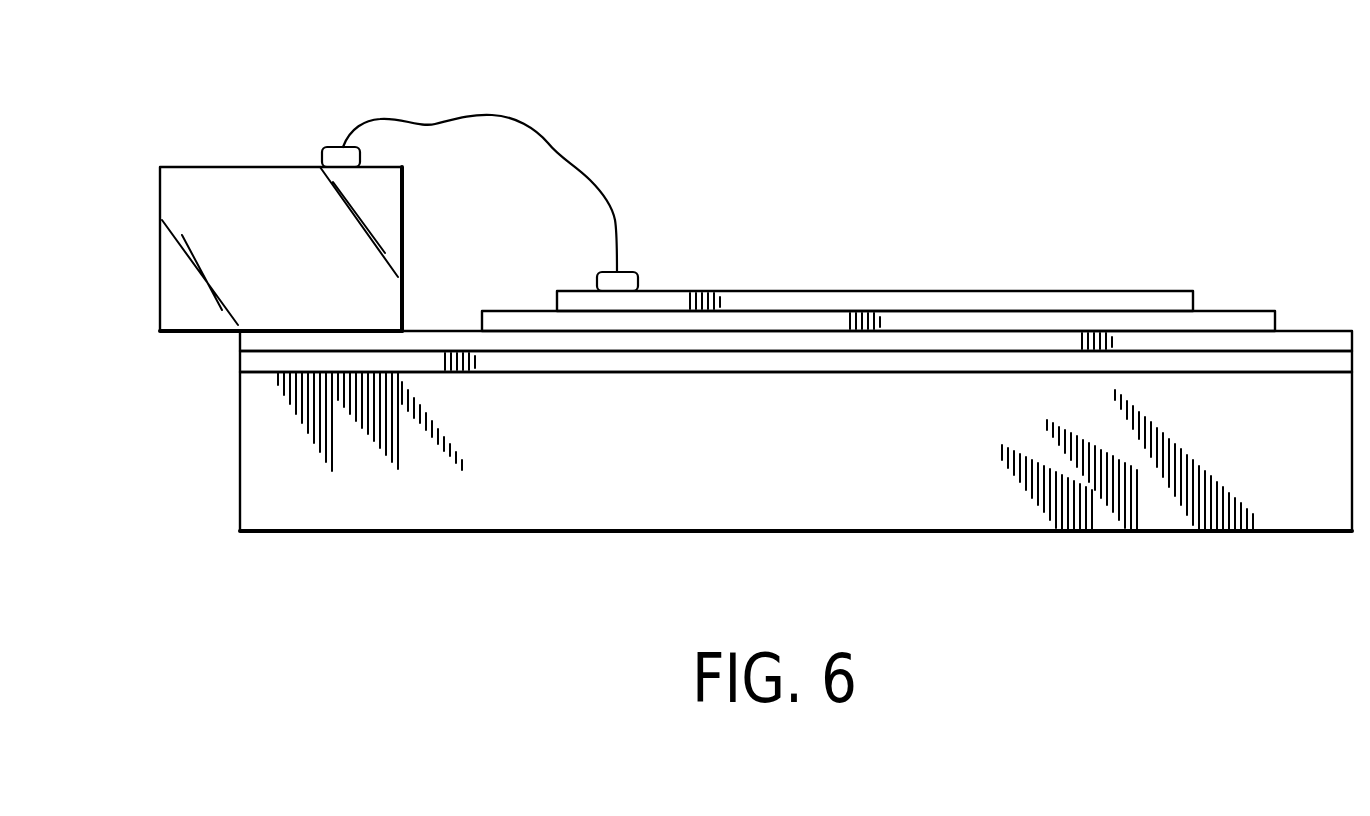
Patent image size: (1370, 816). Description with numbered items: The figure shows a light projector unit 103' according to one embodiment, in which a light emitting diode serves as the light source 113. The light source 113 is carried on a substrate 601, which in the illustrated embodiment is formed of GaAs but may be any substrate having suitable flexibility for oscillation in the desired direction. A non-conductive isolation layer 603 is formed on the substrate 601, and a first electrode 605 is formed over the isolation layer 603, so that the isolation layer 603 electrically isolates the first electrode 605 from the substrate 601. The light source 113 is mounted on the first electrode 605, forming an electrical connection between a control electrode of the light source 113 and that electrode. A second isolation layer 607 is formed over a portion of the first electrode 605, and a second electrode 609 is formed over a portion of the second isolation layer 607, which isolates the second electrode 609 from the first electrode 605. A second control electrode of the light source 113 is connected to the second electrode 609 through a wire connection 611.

The light projector unit 103' is at (707, 303).
The light source 113 is at (281, 239).
The substrate 601 is at (796, 452).
The isolation layer 603 is at (240, 363).
The first electrode 605 is at (240, 342).
The second isolation layer 607 is at (505, 311).
The second electrode 609 is at (1053, 291).
The wire connection 611 is at (563, 135).